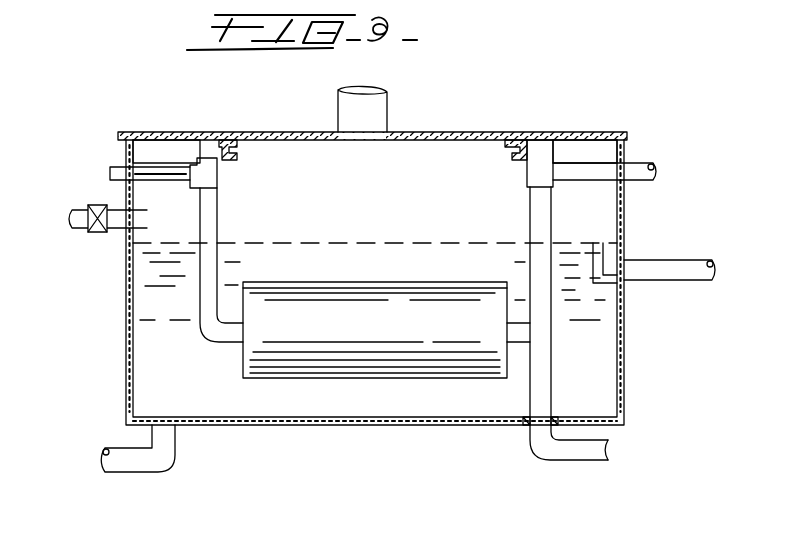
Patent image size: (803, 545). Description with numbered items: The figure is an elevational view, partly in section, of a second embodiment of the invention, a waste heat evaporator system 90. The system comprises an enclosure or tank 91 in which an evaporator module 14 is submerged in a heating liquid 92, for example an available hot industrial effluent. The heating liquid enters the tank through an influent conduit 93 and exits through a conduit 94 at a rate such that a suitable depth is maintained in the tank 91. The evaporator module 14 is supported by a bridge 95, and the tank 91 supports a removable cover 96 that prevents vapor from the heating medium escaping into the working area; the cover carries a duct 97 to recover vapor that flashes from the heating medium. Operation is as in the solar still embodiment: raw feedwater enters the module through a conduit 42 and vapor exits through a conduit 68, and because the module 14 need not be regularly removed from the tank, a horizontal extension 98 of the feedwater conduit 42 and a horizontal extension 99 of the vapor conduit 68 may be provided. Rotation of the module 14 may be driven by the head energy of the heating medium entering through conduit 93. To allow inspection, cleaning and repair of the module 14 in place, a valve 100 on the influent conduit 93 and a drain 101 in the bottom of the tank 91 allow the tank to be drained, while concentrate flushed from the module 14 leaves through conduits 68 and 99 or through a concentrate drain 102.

The evaporator module 14 is at (343, 332).
The conduit 42 is at (200, 276).
The conduit 68 is at (555, 213).
The waste heat evaporator system 90 is at (607, 335).
The tank 91 is at (126, 330).
The heating liquid 92 is at (342, 243).
The conduit 93 is at (107, 232).
The conduit 94 is at (675, 258).
The bridge 95 is at (237, 157).
The removable cover 96 is at (490, 132).
The duct 97 is at (377, 108).
The horizontal extension 98 is at (152, 163).
The horizontal extension 99 is at (640, 163).
The valve 100 is at (96, 205).
The drain 101 is at (146, 472).
The concentrate drain 102 is at (583, 460).